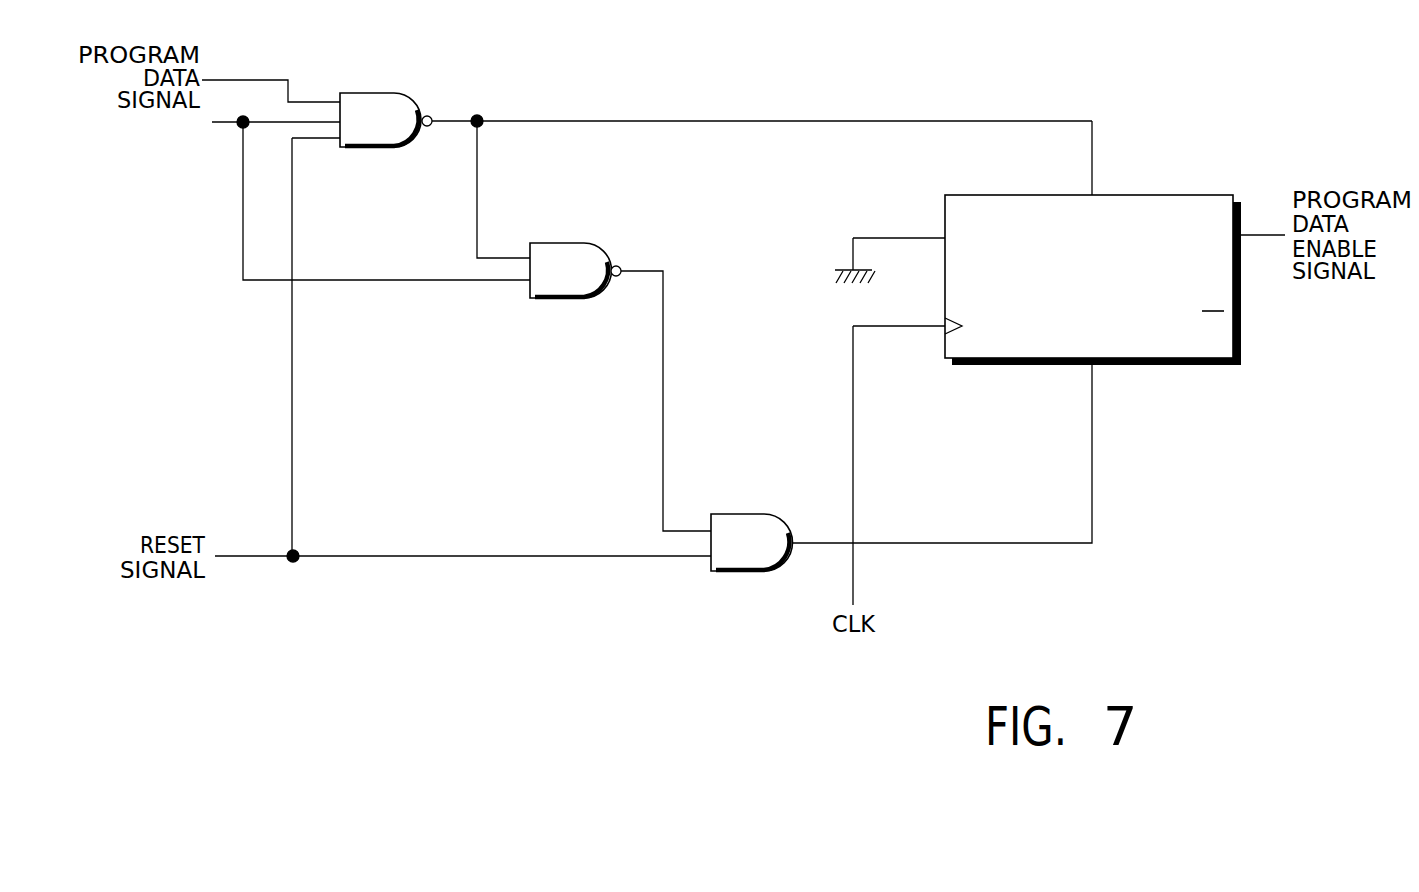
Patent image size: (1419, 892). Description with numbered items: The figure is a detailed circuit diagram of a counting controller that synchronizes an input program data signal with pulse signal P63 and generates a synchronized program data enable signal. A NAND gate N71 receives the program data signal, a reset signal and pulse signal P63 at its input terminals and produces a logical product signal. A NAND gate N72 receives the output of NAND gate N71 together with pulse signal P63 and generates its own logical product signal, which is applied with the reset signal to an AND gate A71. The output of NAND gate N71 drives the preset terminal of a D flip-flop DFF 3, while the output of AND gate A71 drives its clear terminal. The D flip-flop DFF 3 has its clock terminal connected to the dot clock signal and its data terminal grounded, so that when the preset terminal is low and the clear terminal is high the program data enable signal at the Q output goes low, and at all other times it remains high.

The NAND gate N71 is at (386, 105).
The NAND gate N72 is at (575, 257).
The AND gate A71 is at (752, 529).
The D flip-flop 3 is at (1093, 280).
The pulse signal P63 is at (336, 196).